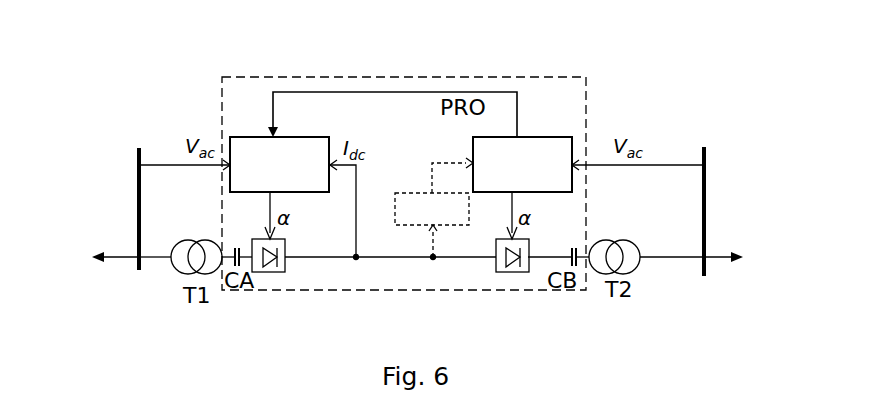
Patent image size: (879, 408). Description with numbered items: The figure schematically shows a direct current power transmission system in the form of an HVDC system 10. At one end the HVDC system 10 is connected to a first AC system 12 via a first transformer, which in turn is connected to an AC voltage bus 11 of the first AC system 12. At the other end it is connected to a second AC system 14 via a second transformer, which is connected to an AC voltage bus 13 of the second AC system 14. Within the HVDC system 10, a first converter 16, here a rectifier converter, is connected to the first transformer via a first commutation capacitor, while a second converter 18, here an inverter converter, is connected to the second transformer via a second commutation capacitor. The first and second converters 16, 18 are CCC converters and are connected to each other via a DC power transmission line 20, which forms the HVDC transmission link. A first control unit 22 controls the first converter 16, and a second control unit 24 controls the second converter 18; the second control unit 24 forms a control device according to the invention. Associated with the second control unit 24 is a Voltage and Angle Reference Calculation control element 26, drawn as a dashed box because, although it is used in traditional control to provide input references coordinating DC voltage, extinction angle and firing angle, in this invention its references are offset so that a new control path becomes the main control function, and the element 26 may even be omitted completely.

The HVDC system 10 is at (583, 100).
The AC voltage bus 11 is at (137, 270).
The first AC system 12 is at (83, 265).
The AC voltage bus 13 is at (702, 270).
The second AC system 14 is at (754, 258).
The first converter 16 is at (288, 263).
The second converter 18 is at (497, 263).
The DC power transmission line 20 is at (384, 255).
The first control unit 22 is at (279, 164).
The second control unit 24 is at (522, 164).
The Voltage and Angle Reference Calculation (VARC) control element 26 is at (415, 192).